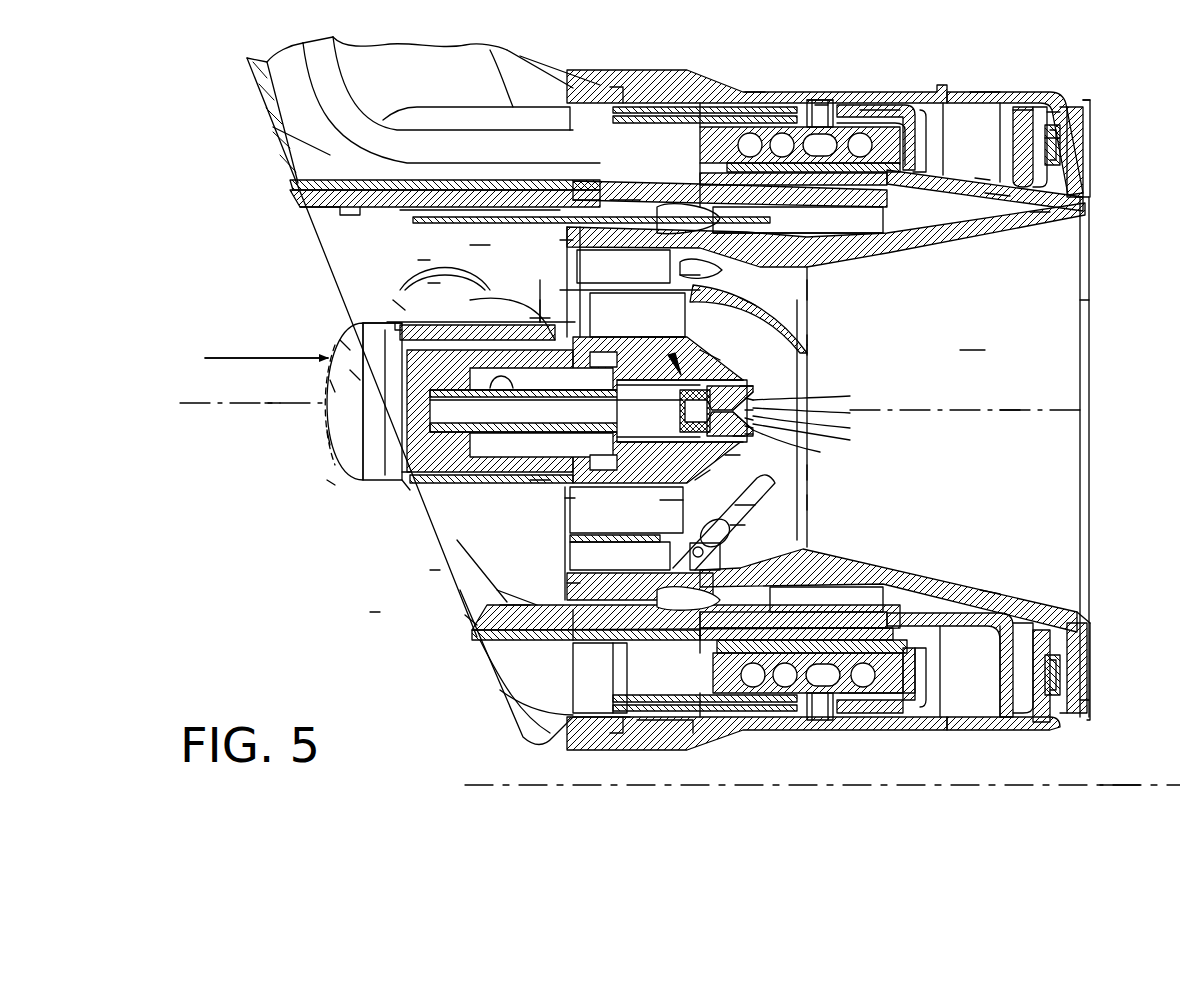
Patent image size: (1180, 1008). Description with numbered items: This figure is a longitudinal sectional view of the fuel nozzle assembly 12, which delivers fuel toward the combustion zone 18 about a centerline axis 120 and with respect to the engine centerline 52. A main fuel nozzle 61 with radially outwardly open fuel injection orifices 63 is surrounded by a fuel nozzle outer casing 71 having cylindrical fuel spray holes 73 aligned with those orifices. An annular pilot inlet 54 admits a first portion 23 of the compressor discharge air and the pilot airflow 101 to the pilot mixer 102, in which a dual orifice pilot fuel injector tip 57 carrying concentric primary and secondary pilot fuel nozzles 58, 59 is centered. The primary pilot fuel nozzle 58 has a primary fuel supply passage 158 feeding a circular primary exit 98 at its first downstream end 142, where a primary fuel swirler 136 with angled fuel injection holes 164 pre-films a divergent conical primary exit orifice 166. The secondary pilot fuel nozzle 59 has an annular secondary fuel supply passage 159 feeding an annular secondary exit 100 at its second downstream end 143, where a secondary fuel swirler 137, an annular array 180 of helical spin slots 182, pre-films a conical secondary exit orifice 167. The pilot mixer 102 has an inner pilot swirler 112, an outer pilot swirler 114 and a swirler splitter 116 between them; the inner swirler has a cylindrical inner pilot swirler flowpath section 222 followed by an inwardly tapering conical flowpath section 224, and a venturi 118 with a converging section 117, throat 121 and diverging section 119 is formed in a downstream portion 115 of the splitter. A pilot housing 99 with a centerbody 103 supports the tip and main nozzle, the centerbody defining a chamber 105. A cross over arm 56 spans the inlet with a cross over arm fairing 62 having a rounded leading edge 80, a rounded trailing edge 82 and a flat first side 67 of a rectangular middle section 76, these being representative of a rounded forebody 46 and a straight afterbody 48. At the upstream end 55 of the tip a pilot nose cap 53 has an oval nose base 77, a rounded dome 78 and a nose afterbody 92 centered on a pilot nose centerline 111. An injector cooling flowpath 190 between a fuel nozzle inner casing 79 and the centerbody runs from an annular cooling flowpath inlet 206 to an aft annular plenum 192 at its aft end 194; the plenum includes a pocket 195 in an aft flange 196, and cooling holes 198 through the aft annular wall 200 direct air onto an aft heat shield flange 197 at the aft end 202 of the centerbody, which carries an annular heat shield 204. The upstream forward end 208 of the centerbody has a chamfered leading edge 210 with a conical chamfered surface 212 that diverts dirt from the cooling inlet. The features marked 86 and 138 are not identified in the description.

The fuel nozzle assembly 12 is at (330, 480).
The combustion zone 18 is at (1114, 292).
The first portion of compressor discharge air 23 is at (245, 354).
The rounded forebody 46 is at (438, 288).
The straight afterbody 48 is at (450, 275).
The engine centerline 52 is at (1120, 785).
The pilot nose cap 53 is at (345, 345).
The annular pilot inlet 54 is at (380, 612).
The upstream end 55 is at (403, 472).
The cross over arm 56 is at (420, 260).
The dual orifice pilot fuel injector tip 57 is at (405, 485).
The primary pilot fuel nozzle 58 is at (755, 410).
The secondary pilot fuel nozzle 59 is at (740, 455).
The main fuel nozzle 61 is at (871, 112).
The cross over arm fairing 62 is at (428, 283).
The fuel injection orifices 63 is at (821, 100).
The flat first side 67 is at (540, 300).
The fuel nozzle outer casing 71 is at (775, 92).
The cylindrical fuel spray holes 73 is at (797, 99).
The rectangular middle section 76 is at (478, 240).
The nose base 77 is at (355, 375).
The rounded dome 78 is at (330, 440).
The fuel nozzle inner casing 79 is at (980, 178).
The rounded leading edge 80 is at (393, 300).
The rounded trailing edge 82 is at (540, 318).
The dashed contour 86 is at (332, 385).
The nose afterbody 92 is at (358, 320).
The circular primary exit 98 is at (755, 427).
The pilot housing 99 is at (465, 620).
The annular secondary exit 100 is at (755, 434).
The pilot airflow 101 is at (437, 568).
The pilot mixer 102 is at (522, 592).
The centerbody 103 is at (990, 590).
The chamber 105 is at (973, 340).
The pilot nose centerline 111 is at (268, 422).
The inner pilot swirler 112 is at (572, 498).
The outer pilot swirler 114 is at (570, 583).
The downstream portion 115 is at (805, 290).
The swirler splitter 116 is at (702, 275).
The converging section 117 is at (812, 503).
The venturi 118 is at (812, 474).
The diverging section 119 is at (812, 340).
The centerline axis 120 is at (1010, 407).
The throat 121 is at (812, 352).
The primary fuel swirler 136 is at (710, 355).
The secondary fuel swirler 137 is at (655, 340).
The curved duct wall 138 is at (750, 298).
The first downstream end 142 is at (755, 401).
The second downstream end 143 is at (735, 380).
The primary fuel supply passage 158 is at (556, 408).
The annular secondary fuel supply passage 159 is at (540, 480).
The fuel injection holes 164 is at (745, 438).
The conical primary exit orifice 166 is at (755, 419).
The conical secondary exit orifice 167 is at (750, 390).
The annular array 180 is at (665, 503).
The helical spin slots 182 is at (703, 476).
The injector cooling flowpath 190 is at (798, 221).
The aft annular plenum 192 is at (1025, 108).
The aft end 194 is at (995, 200).
The annular pocket 195 is at (1085, 198).
The aft flange 196 is at (985, 92).
The aft heat shield flange 197 is at (1087, 103).
The cooling holes 198 is at (1057, 112).
The axially aft annular wall 200 is at (1048, 138).
The aft end of centerbody 202 is at (1040, 215).
The annular heat shield 204 is at (1090, 700).
The annular cooling flowpath inlet 206 is at (567, 610).
The upstream forward end 208 is at (577, 200).
The annular chamfered leading edge 210 is at (620, 200).
The conical chamfered surface 212 is at (560, 243).
The inner pilot swirler flowpath section 222 is at (740, 525).
The conical flowpath section 224 is at (745, 515).